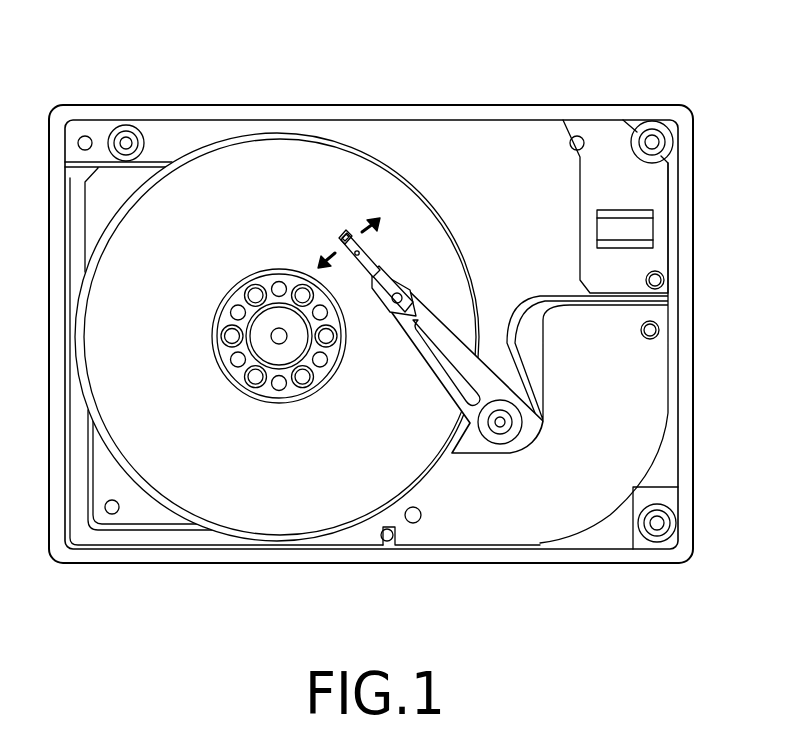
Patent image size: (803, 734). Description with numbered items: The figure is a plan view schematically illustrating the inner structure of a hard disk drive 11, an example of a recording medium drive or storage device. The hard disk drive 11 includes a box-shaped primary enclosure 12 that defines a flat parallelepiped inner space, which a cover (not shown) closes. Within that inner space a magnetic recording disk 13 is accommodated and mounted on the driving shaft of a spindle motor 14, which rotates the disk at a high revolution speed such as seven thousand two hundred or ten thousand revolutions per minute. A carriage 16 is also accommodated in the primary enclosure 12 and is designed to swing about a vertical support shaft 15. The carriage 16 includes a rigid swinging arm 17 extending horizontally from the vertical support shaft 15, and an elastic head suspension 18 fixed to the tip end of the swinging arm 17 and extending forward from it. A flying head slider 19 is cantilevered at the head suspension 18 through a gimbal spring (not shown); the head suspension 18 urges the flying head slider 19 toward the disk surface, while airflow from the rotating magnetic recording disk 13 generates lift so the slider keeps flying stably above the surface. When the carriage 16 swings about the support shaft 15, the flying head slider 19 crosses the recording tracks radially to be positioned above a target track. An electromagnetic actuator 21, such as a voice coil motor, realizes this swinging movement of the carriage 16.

The hard disk drive 11 is at (406, 100).
The primary enclosure 12 is at (277, 563).
The magnetic recording disk 13 is at (457, 243).
The spindle motor 14 is at (253, 346).
The vertical support shaft 15 is at (505, 428).
The carriage 16 is at (446, 391).
The swinging arm 17 is at (437, 373).
The head suspension 18 is at (371, 262).
The flying head slider 19 is at (337, 238).
The electromagnetic actuator 21 is at (593, 527).